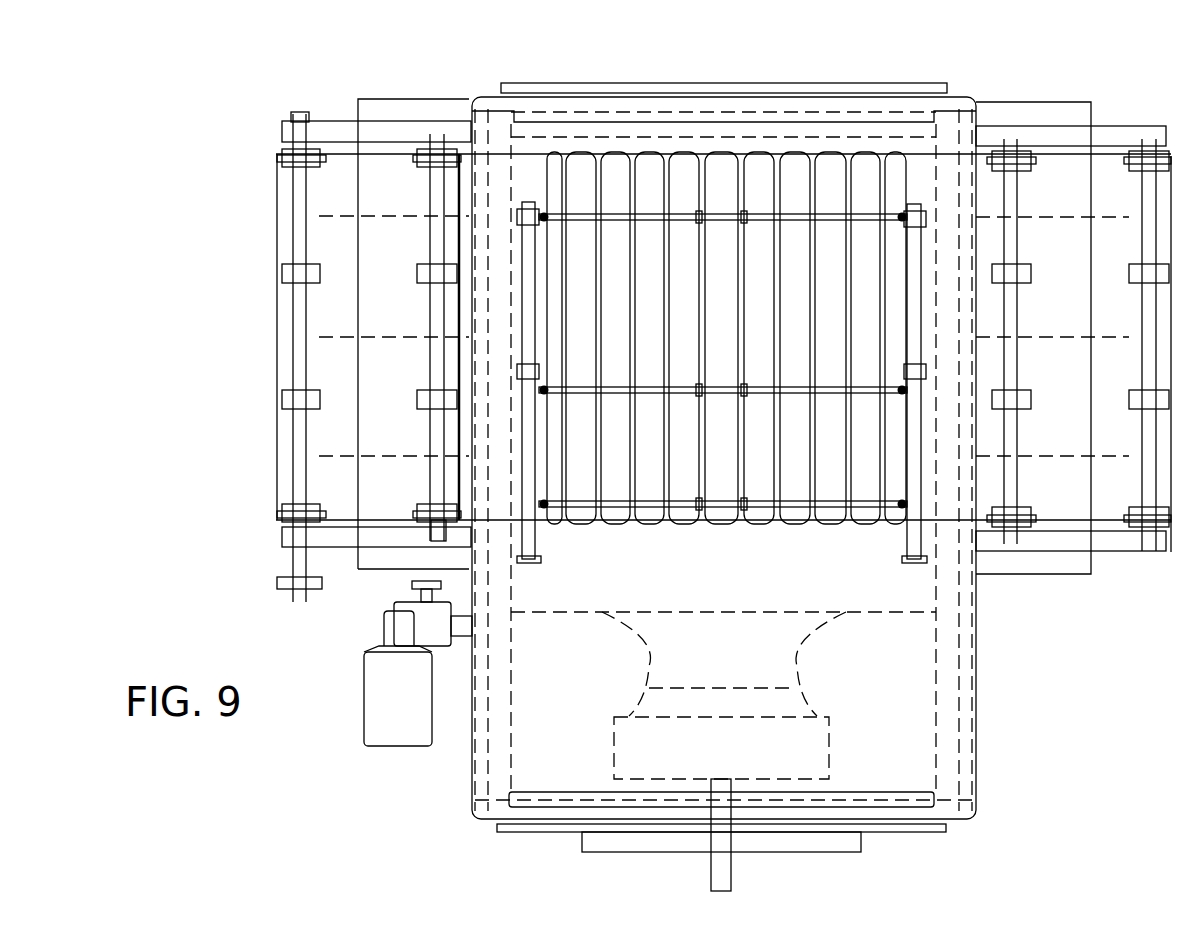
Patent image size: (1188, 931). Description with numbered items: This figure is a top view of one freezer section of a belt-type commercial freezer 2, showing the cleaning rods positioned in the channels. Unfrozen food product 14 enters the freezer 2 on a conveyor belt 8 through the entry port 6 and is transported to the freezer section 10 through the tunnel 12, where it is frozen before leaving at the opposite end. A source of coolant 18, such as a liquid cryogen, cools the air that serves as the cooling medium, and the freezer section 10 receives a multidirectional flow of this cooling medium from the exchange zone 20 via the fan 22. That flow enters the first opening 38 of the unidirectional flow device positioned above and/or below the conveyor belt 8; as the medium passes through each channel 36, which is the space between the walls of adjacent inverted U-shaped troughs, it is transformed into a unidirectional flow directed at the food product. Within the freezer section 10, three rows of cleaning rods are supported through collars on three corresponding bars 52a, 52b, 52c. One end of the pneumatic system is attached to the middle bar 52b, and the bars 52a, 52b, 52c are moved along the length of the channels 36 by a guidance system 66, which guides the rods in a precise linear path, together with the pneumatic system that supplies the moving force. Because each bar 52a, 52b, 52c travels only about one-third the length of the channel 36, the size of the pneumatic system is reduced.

The freezer 2 is at (857, 69).
The entry port 6 is at (437, 527).
The conveyor belt 8 is at (380, 263).
The freezer section 10 is at (640, 148).
The tunnel 12 is at (615, 528).
The food product 14 is at (287, 402).
The source of coolant 18 is at (414, 710).
The exchange zone 20 is at (808, 572).
The fan or blower 22 is at (736, 661).
The channel 36 is at (707, 153).
The first opening 38 is at (740, 153).
The bar 52a is at (865, 212).
The middle bar 52b is at (688, 392).
The bar 52c is at (832, 508).
The guidance system 66 is at (527, 203).